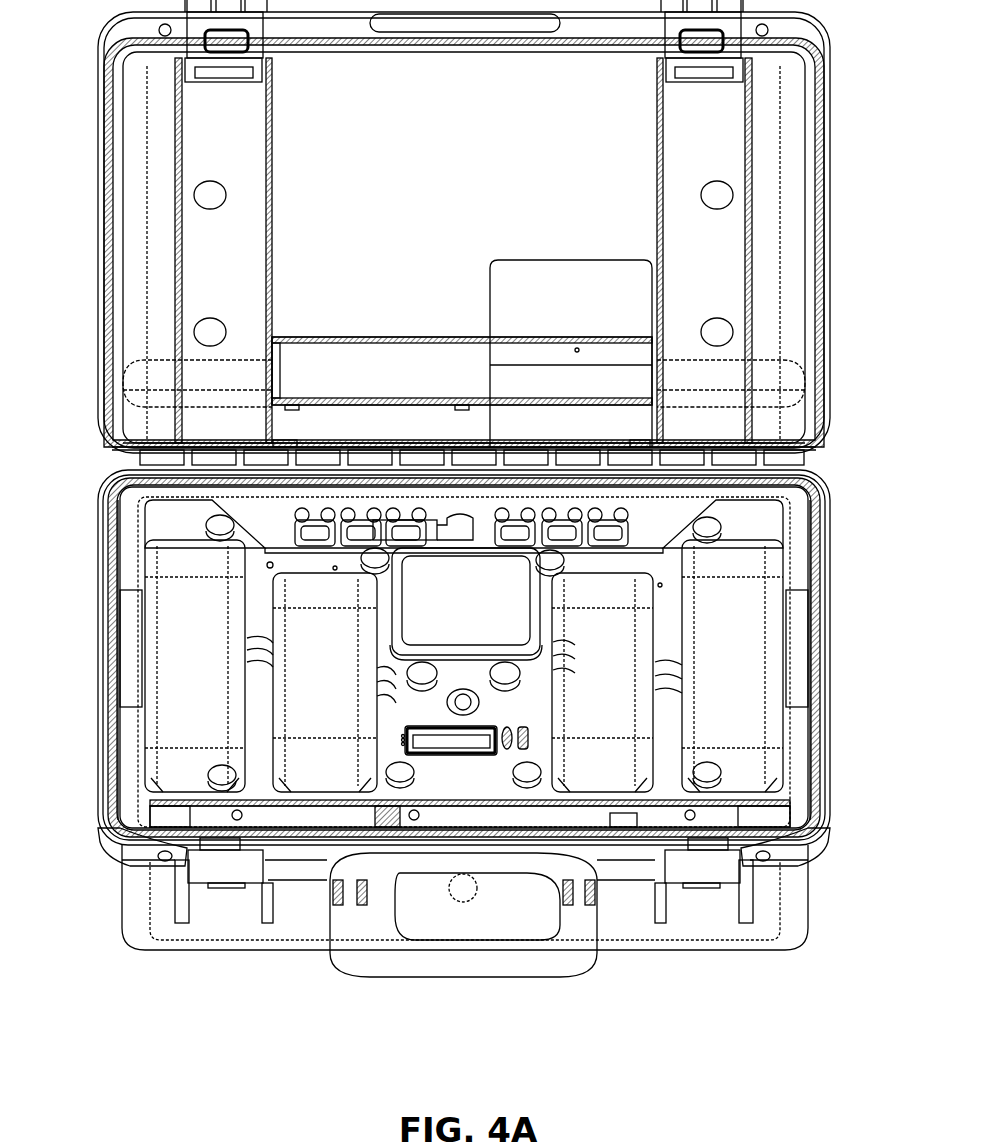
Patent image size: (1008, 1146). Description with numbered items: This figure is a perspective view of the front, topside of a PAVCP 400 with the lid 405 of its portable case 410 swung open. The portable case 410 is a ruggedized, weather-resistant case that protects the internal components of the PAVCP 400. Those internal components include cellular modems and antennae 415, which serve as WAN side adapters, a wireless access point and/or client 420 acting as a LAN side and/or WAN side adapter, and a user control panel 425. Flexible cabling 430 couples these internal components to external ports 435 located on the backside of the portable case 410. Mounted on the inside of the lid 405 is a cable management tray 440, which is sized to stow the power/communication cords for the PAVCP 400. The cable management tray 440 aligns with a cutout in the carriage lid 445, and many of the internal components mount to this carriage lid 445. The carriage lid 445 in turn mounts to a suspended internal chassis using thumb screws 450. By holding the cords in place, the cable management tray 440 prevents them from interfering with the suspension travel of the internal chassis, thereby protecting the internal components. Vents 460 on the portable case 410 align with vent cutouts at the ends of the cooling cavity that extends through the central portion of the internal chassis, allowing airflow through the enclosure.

The PAVCP 400 is at (464, 538).
The lid 405 is at (438, 176).
The portable case 410 is at (200, 953).
The cellular modems and antennae 415 is at (176, 641).
The wireless access point and/or client 420 is at (441, 608).
The user control panel 425 is at (463, 765).
The flexible cabling 430 is at (412, 523).
The external ports 435 is at (310, 515).
The cable management tray 440 is at (366, 384).
The carriage lid 445 is at (163, 531).
The thumb screws 450 is at (213, 785).
The vents 460 is at (78, 660).